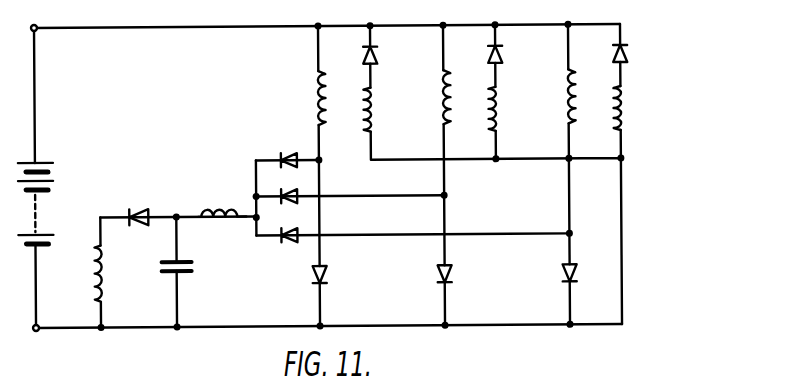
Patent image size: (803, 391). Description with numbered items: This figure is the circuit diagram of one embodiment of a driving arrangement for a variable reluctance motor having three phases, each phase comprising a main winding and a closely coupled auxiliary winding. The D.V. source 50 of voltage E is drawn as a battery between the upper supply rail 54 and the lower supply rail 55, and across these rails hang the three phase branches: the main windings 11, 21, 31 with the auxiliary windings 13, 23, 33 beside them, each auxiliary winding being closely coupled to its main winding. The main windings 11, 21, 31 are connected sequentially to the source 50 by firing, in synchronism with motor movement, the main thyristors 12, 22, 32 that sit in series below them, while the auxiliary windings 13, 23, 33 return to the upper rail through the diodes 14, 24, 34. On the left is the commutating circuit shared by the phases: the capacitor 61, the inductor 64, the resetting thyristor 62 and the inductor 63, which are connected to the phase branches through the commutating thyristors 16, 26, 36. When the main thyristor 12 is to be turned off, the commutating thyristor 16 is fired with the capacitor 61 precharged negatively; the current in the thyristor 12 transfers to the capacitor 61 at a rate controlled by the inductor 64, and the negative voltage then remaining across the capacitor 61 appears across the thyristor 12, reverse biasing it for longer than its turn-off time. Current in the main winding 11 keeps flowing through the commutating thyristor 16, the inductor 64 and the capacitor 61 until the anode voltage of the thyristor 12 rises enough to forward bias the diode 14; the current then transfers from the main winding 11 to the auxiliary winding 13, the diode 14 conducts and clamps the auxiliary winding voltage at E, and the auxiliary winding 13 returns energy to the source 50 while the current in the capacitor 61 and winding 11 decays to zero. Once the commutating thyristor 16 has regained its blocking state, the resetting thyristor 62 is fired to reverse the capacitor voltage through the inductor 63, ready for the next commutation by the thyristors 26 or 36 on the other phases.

The positive supply terminal 54 is at (37, 26).
The negative supply terminal 55 is at (36, 331).
The D.V. source 50 is at (50, 174).
The resetting thyristor 62 is at (135, 211).
The inductor 64 is at (212, 208).
The inductor 63 is at (105, 284).
The capacitor 61 is at (184, 275).
The commutating thyristor 16 is at (288, 155).
The diode 26 is at (298, 199).
The diode 36 is at (295, 246).
The main winding 11 is at (311, 86).
The auxiliary winding 13 is at (378, 90).
The diode 14 is at (378, 56).
The main winding 21 is at (438, 117).
The auxiliary winding 23 is at (504, 92).
The diode 24 is at (503, 59).
The main winding 31 is at (565, 118).
The auxiliary winding 33 is at (613, 130).
The diode 34 is at (615, 57).
The main thyristor 12 is at (325, 272).
The main thyristor 22 is at (452, 273).
The main thyristor 32 is at (578, 272).